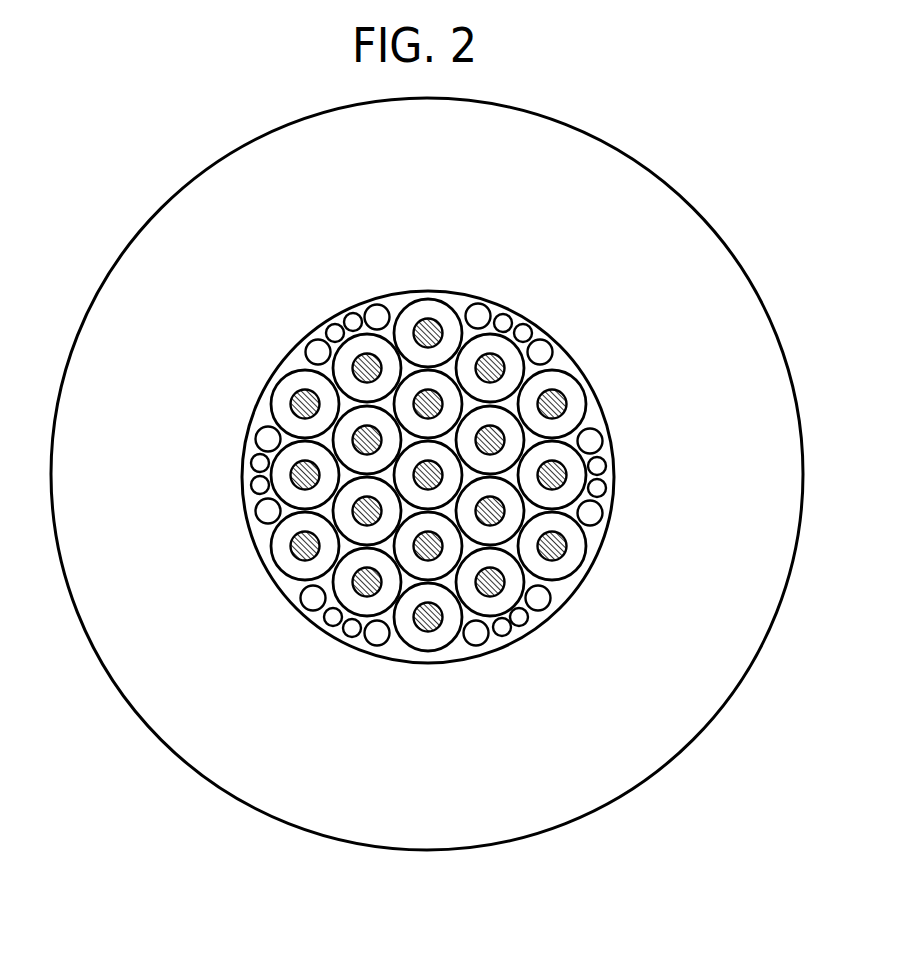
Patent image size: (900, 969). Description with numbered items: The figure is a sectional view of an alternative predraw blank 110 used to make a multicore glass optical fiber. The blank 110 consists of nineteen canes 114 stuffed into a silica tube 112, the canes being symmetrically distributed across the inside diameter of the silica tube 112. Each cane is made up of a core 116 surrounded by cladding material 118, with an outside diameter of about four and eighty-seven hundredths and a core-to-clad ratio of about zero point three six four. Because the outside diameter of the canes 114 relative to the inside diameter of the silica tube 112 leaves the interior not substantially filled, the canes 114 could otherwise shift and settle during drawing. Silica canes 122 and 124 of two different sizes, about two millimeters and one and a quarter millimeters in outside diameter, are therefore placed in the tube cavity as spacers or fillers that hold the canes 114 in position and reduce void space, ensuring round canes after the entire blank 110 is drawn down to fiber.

The blank 110 is at (456, 474).
The silica tube 112 is at (800, 432).
The canes 114 is at (260, 402).
The cores 116 is at (296, 393).
The cladding material 118 is at (298, 377).
The silica canes 122 is at (482, 642).
The silica canes 124 is at (330, 620).